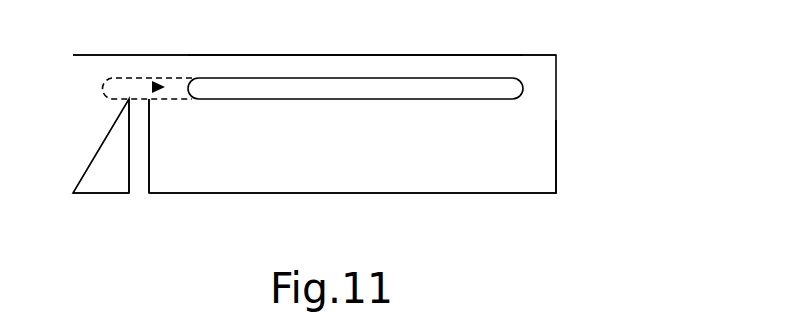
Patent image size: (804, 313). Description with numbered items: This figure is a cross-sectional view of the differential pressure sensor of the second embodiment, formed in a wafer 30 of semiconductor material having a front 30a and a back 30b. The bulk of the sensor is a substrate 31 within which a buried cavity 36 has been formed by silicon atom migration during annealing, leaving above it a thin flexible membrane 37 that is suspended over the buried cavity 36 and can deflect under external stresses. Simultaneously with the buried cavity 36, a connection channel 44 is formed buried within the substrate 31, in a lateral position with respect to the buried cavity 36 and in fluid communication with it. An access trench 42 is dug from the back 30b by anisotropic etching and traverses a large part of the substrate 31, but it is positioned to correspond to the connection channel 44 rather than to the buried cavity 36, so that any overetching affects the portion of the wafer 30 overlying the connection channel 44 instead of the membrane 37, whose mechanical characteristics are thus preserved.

The wafer 30 is at (594, 120).
The front 30a is at (145, 52).
The back 30b is at (89, 199).
The substrate 31 is at (538, 180).
The buried cavity 36 is at (502, 89).
The membrane 37 is at (325, 65).
The access trench 42 is at (142, 192).
The connection channel 44 is at (170, 93).